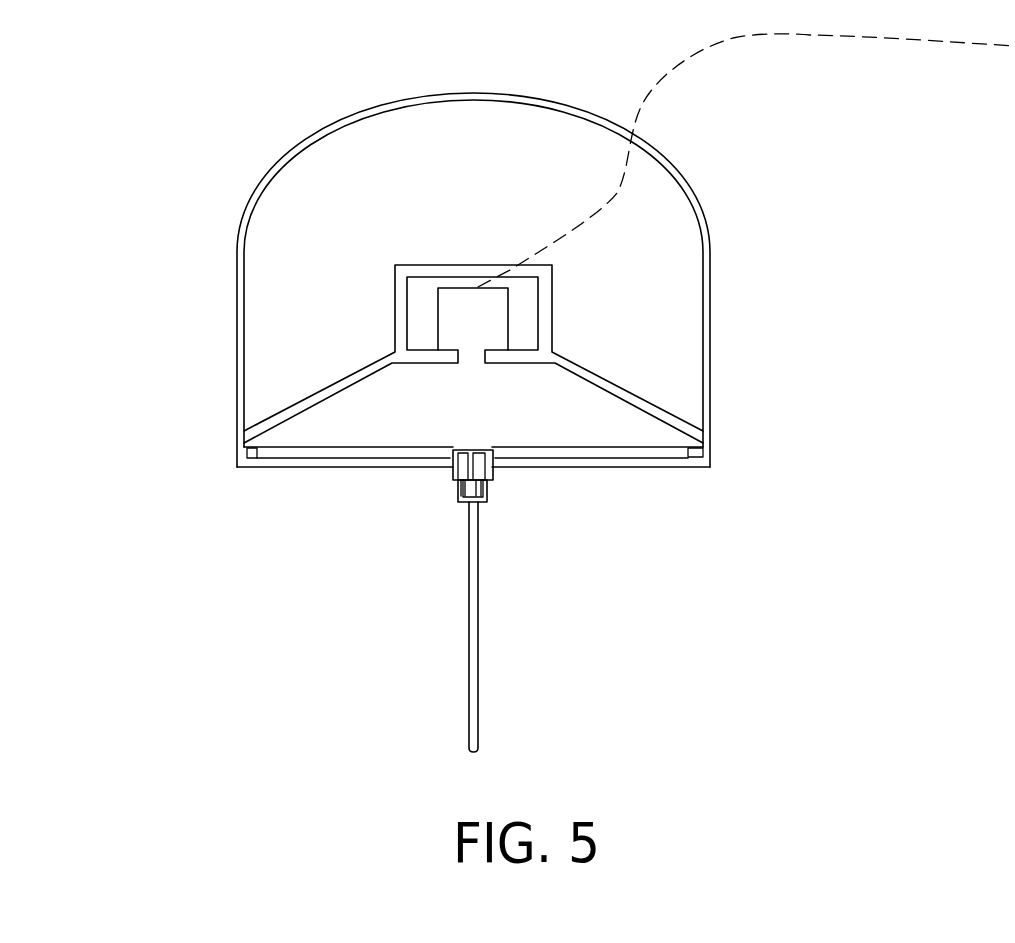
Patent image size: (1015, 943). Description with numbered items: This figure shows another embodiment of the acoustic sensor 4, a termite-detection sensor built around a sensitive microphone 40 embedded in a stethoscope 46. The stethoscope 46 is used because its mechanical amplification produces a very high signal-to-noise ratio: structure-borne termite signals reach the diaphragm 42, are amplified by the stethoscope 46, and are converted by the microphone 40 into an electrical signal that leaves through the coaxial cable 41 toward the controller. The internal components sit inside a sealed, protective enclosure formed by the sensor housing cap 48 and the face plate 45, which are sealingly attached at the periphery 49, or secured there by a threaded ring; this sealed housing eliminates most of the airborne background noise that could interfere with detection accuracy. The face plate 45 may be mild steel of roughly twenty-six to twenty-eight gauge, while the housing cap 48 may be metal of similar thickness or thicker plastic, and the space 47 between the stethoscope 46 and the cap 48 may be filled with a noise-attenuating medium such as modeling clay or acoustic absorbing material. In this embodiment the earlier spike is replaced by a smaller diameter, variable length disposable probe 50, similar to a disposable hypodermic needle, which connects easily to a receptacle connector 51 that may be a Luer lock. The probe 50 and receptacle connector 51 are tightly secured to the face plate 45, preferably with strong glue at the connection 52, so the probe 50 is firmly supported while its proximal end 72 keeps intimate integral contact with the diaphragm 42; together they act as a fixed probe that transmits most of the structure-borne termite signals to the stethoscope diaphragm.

The acoustic sensor 4 is at (464, 293).
The microphone 40 is at (460, 297).
The coaxial cable 41 is at (807, 37).
The diaphragm 42 is at (588, 445).
The face plate 45 is at (287, 468).
The stethoscope 46 is at (320, 383).
The space 47 is at (307, 263).
The sensor housing cap 48 is at (318, 134).
The periphery 49 is at (242, 453).
The disposable probe 50 is at (461, 496).
The receptacle connector 51 is at (458, 491).
The connection 52 is at (493, 473).
The proximal end 72 is at (470, 450).